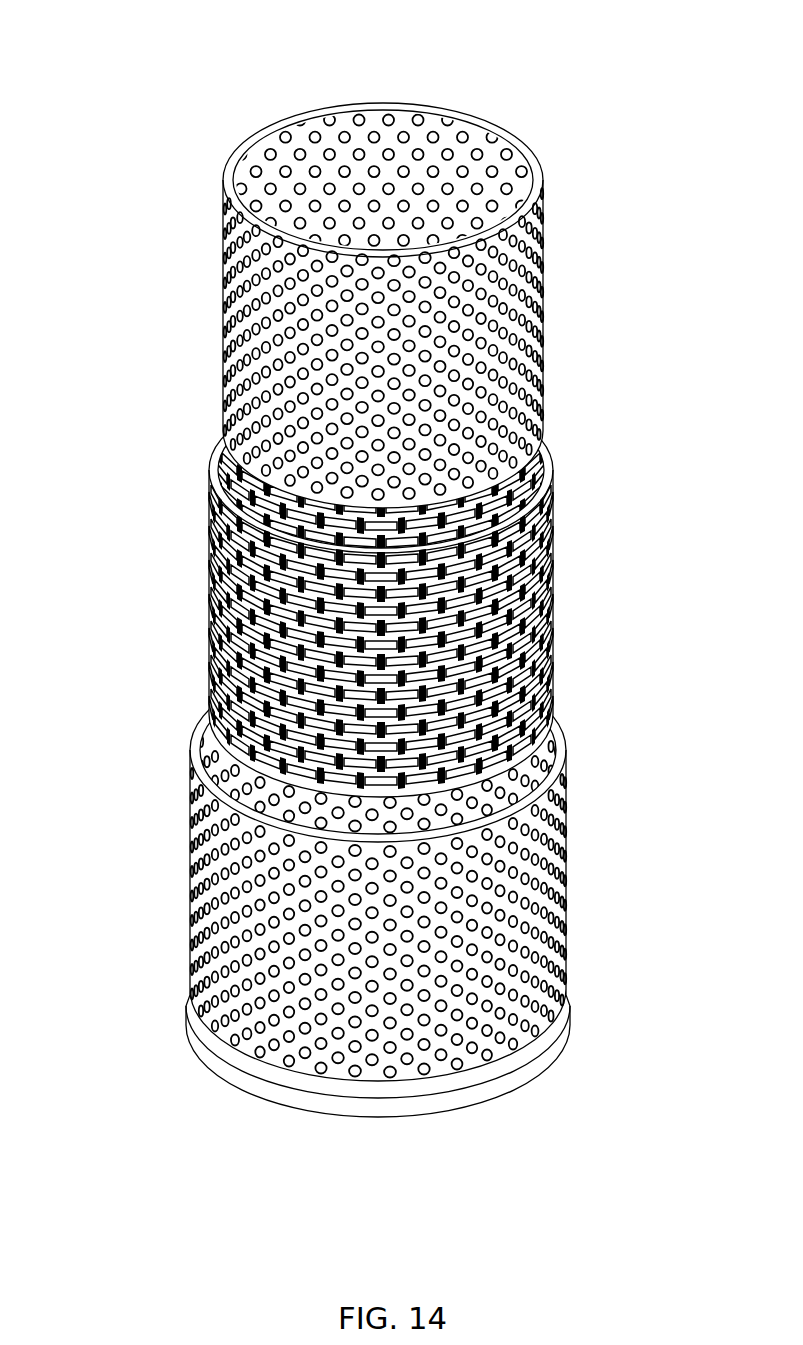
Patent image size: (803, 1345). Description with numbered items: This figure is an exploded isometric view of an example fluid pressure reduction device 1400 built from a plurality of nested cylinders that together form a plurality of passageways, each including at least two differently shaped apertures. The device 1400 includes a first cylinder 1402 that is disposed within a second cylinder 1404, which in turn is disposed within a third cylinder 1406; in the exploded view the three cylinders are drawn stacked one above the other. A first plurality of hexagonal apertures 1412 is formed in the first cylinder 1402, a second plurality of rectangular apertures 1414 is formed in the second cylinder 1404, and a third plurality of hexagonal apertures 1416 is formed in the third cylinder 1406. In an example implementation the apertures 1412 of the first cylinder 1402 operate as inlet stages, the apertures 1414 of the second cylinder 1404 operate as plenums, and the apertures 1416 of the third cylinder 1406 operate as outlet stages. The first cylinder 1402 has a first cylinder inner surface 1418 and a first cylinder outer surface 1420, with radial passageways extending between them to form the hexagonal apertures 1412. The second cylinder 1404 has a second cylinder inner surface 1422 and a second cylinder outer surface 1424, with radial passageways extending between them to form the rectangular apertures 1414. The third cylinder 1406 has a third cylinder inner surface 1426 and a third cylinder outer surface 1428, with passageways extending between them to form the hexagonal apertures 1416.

The fluid pressure reduction device 1400 is at (156, 42).
The first cylinder 1402 is at (389, 302).
The second cylinder 1404 is at (367, 592).
The third cylinder 1406 is at (387, 887).
The first plurality of hexagonal apertures 1412 is at (520, 393).
The second plurality of rectangular apertures 1414 is at (367, 633).
The third plurality of hexagonal apertures 1416 is at (535, 925).
The first cylinder inner surface 1418 is at (495, 142).
The first cylinder outer surface 1420 is at (530, 468).
The second cylinder inner surface 1422 is at (250, 495).
The second cylinder outer surface 1424 is at (208, 625).
The third cylinder inner surface 1426 is at (535, 770).
The third cylinder outer surface 1428 is at (218, 1035).